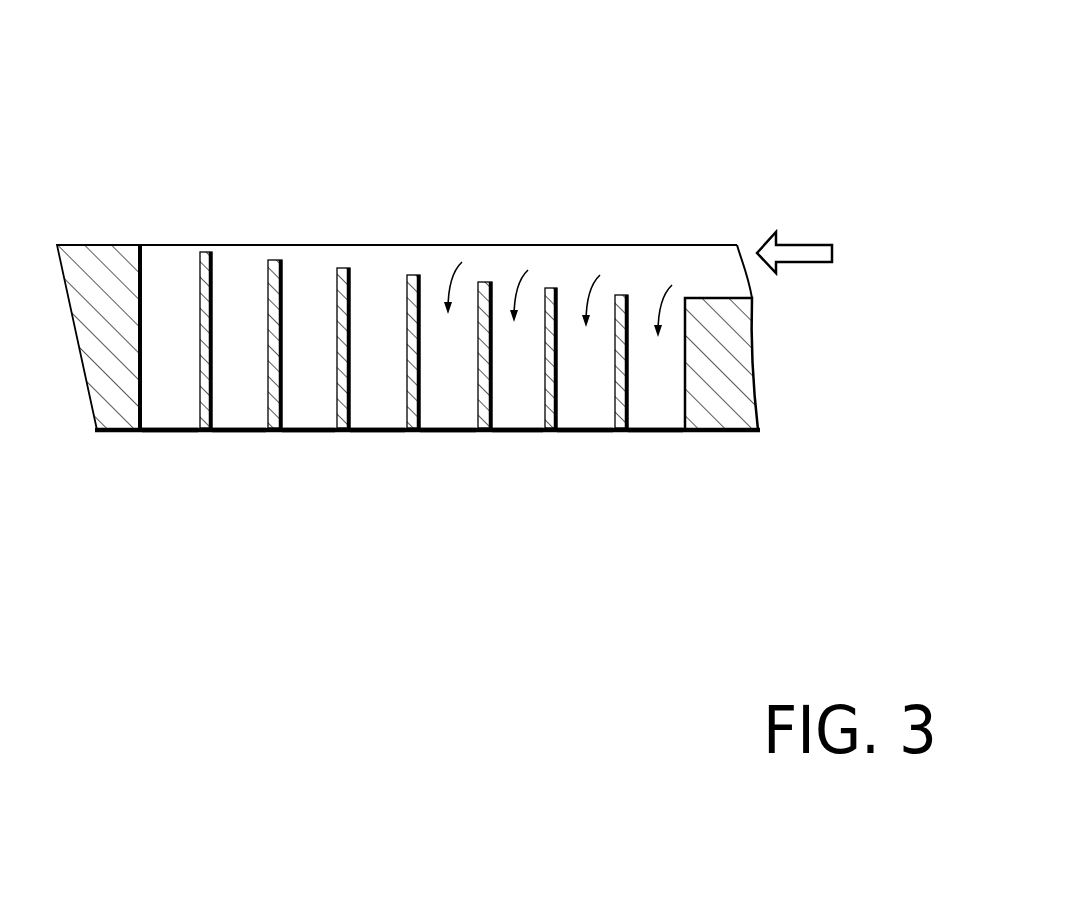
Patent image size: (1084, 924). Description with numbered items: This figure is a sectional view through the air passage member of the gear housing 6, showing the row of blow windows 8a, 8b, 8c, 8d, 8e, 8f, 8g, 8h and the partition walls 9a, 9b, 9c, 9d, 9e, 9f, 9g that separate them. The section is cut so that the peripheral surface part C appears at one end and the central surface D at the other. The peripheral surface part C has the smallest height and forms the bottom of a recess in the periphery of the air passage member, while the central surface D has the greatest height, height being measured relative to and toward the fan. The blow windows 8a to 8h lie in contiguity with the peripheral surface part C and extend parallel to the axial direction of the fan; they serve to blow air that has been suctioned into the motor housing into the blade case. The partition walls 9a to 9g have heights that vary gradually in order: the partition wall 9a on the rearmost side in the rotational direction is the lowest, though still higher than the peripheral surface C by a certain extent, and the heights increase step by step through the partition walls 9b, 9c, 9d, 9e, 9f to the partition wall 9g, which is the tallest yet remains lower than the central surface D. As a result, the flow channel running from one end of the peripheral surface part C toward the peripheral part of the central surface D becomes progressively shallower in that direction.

The gear housing 6 is at (660, 213).
The peripheral surface part C is at (713, 298).
The central surface D is at (102, 245).
The partition wall 9a is at (628, 335).
The partition wall 9b is at (557, 328).
The partition wall 9c is at (492, 328).
The partition wall 9d is at (420, 327).
The partition wall 9e is at (350, 318).
The partition wall 9f is at (282, 300).
The partition wall 9g is at (212, 290).
The blow window 8a is at (648, 432).
The blow window 8b is at (577, 432).
The blow window 8c is at (512, 432).
The blow window 8d is at (440, 432).
The blow window 8e is at (373, 432).
The blow window 8f is at (306, 432).
The blow window 8g is at (236, 432).
The blow window 8h is at (170, 432).